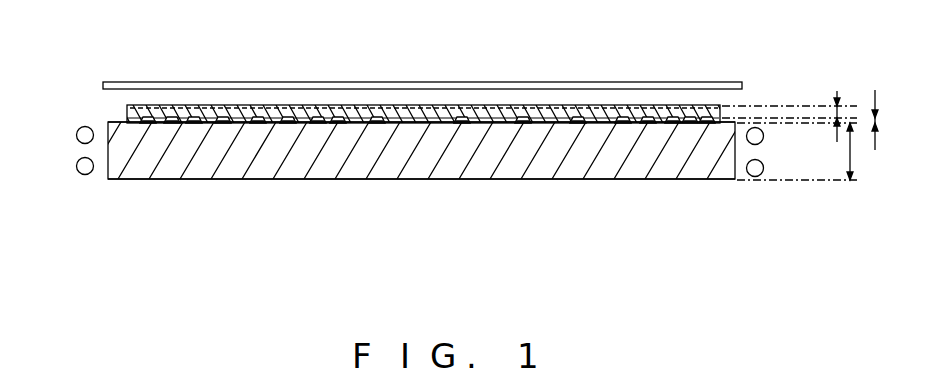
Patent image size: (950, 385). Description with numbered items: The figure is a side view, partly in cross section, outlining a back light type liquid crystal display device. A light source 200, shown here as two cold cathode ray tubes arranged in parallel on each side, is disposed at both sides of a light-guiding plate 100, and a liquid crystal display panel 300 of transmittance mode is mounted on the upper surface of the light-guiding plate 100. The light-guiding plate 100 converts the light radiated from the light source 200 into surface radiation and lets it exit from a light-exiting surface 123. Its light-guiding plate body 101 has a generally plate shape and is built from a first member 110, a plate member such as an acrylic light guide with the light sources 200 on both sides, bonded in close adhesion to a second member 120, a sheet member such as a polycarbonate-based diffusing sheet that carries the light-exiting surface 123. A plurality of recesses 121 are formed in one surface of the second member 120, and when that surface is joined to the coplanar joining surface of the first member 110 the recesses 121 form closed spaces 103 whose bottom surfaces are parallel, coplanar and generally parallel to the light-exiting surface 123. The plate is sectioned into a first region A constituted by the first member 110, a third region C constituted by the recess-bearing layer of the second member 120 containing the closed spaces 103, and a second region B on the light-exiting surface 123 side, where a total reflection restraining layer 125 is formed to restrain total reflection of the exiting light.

The light-guiding plate 100 is at (637, 182).
The light-guiding plate body 101 is at (113, 180).
The first member 110 is at (112, 123).
The closed spaces 103 is at (183, 114).
The second member 120 is at (126, 107).
The recesses 121 is at (238, 112).
The light-exiting surface 123 is at (561, 106).
The total reflection restraining layer 125 is at (617, 116).
The light source 200 is at (77, 163).
The liquid crystal display panel 300 is at (742, 84).
The first region A is at (858, 151).
The second region B is at (836, 97).
The third region C is at (875, 104).